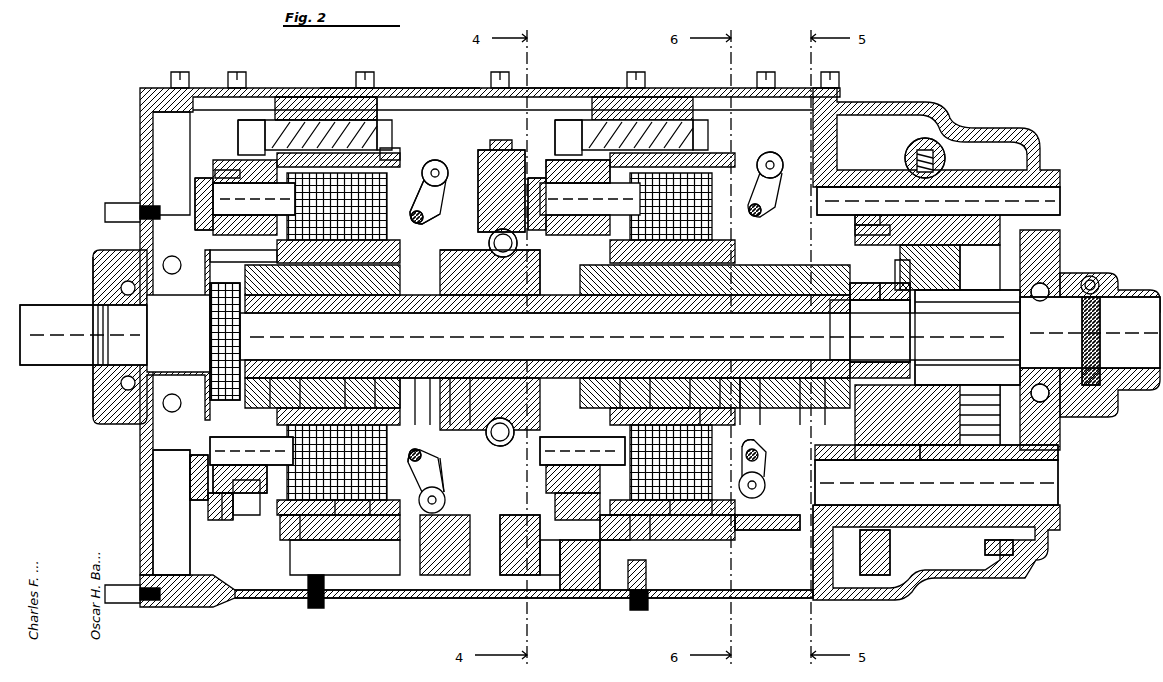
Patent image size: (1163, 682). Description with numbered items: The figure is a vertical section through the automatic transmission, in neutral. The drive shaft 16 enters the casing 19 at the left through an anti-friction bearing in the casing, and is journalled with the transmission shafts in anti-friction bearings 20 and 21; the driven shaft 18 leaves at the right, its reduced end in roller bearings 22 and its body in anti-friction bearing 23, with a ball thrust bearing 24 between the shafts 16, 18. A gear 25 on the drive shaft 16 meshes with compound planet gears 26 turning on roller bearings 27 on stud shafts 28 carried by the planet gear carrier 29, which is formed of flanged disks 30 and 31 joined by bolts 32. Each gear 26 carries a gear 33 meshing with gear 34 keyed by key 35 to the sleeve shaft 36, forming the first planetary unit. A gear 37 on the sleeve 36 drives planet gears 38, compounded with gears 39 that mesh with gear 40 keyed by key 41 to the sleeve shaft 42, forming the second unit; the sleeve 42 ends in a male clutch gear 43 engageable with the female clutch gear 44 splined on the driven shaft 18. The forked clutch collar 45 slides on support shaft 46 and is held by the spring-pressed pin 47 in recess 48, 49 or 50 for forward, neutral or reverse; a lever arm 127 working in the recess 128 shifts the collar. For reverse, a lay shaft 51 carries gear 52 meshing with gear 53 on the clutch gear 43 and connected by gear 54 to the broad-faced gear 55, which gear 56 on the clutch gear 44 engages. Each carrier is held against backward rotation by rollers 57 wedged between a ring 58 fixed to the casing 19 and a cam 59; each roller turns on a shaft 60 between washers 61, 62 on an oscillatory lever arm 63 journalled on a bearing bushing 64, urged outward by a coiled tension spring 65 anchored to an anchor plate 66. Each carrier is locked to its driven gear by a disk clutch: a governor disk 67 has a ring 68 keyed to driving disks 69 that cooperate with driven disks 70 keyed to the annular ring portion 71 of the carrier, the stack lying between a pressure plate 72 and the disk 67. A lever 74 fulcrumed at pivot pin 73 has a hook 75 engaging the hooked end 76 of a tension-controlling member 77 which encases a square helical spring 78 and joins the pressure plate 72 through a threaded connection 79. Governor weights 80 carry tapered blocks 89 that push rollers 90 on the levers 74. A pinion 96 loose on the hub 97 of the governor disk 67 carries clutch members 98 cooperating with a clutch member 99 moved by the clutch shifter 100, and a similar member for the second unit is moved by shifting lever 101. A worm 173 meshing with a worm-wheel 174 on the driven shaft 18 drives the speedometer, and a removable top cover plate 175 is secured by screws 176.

The drive shaft 16 is at (65, 310).
The driven shaft 18 is at (1130, 297).
The casing 19 is at (400, 600).
The anti-friction bearing 20 is at (503, 243).
The anti-friction bearing 21 is at (895, 260).
The roller bearings 22 is at (880, 300).
The anti-friction bearing 23 is at (1030, 285).
The ball thrust bearing 24 is at (835, 330).
The gear 25 is at (210, 325).
The gears 26 is at (215, 520).
The roller bearing 27 is at (232, 520).
The stud shaft 28 is at (192, 500).
The planet gear carrier 29 is at (192, 478).
The spider or flanged disk 30 is at (240, 250).
The spider or flanged disk 31 is at (254, 199).
The bolts 32 is at (196, 200).
The gear 33 is at (252, 512).
The gear 34 is at (262, 400).
The key 35 is at (290, 410).
The sleeve shaft 36 is at (332, 405).
The gear 37 is at (540, 290).
The gears 38 is at (570, 540).
The gears 39 is at (612, 515).
The gear 40 is at (600, 405).
The key 41 is at (635, 405).
The sleeve shaft 42 is at (680, 415).
The male clutch gear 43 is at (882, 331).
The female clutch gear 44 is at (975, 300).
The forked clutch collar 45 is at (975, 250).
The support shaft 46 is at (980, 200).
The spring-pressed pin 47 is at (940, 168).
The recess 48 is at (904, 206).
The recess 49 is at (940, 206).
The recess 50 is at (970, 206).
The lay shaft 51 is at (1050, 485).
The gear 52 is at (890, 555).
The gear 53 is at (899, 272).
The gear 54 is at (985, 547).
The broad-faced gear 55 is at (925, 462).
The gear 56 is at (900, 460).
The roller 57 is at (300, 120).
The ring 58 is at (320, 100).
The cam 59 is at (400, 150).
The shaft 60 is at (540, 160).
The washer 61 is at (392, 135).
The washer 62 is at (270, 115).
The oscillatory lever arm 63 is at (240, 135).
The bearing bushing 64 is at (200, 185).
The coiled tension spring 65 is at (200, 170).
The anchor plate 66 is at (225, 172).
The governor disk 67 is at (412, 512).
The ring 68 is at (355, 405).
The driving disks 69 is at (320, 505).
The driven disks 70 is at (352, 505).
The annular ring portion 71 is at (296, 518).
The pressure plate 72 is at (380, 200).
The pivot pin 73 is at (430, 170).
The lever 74 is at (448, 170).
The hook 75 is at (730, 405).
The hooked end 76 is at (786, 336).
The tension-controlling member 77 is at (388, 405).
The square helical spring 78 is at (676, 400).
The threaded connection 79 is at (318, 400).
The governor weights 80 is at (450, 470).
The blocks 89 is at (455, 480).
The rollers 90 is at (424, 214).
The pinion 96 is at (406, 420).
The hub 97 is at (424, 420).
The clutch members 98 is at (442, 420).
The clutch member 99 is at (462, 420).
The clutch shifter 100 is at (499, 191).
The shifting lever 101 is at (830, 215).
The lever arm 127 is at (892, 236).
The recess 128 is at (885, 226).
The worm 173 is at (1092, 278).
The worm-wheel 174 is at (1091, 385).
The top cover plate 175 is at (555, 88).
The screws 176 is at (430, 88).